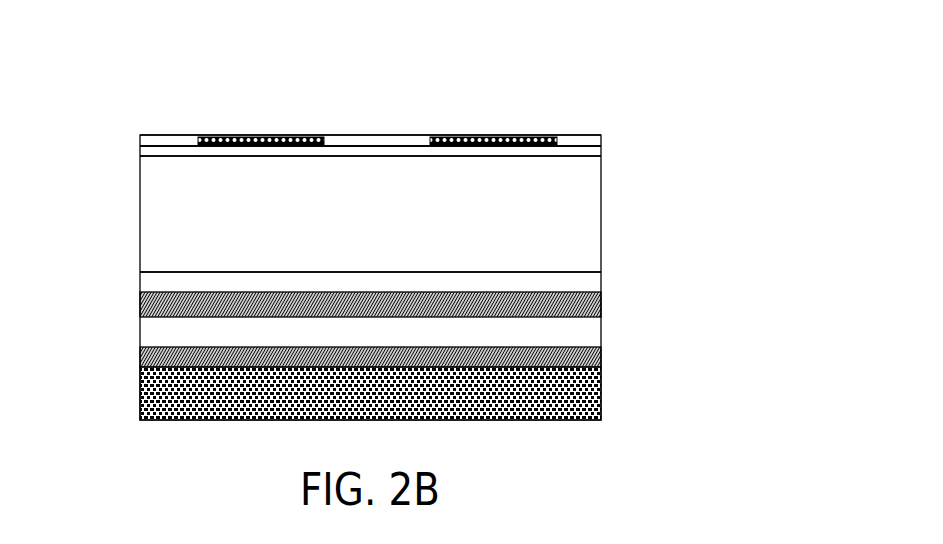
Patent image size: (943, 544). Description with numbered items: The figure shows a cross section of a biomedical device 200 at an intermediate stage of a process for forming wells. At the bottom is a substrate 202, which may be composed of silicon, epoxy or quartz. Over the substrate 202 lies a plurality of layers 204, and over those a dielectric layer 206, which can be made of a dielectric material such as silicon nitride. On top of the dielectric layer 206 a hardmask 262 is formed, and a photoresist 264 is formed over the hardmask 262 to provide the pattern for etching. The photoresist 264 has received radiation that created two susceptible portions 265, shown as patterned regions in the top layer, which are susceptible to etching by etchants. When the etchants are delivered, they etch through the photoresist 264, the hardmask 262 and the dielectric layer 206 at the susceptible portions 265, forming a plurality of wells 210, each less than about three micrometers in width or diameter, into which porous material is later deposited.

The biomedical device 200 is at (584, 90).
The plurality of wells 210 is at (261, 62).
The photoresist 264 is at (601, 141).
The susceptible portions 265 is at (213, 136).
The hardmask 262 is at (138, 153).
The dielectric layer 206 is at (601, 212).
The plurality of layers 204 is at (613, 268).
The substrate 202 is at (520, 418).